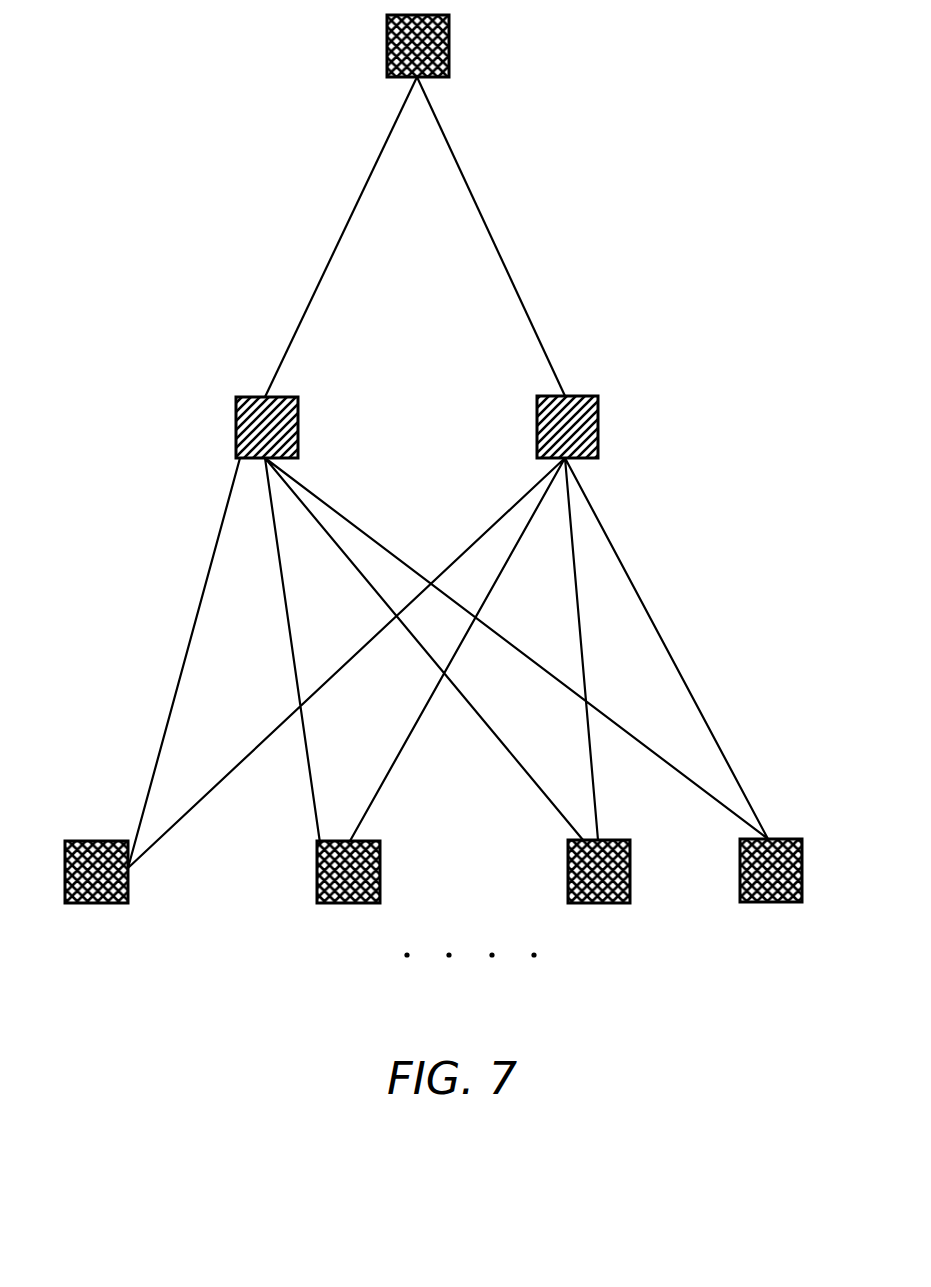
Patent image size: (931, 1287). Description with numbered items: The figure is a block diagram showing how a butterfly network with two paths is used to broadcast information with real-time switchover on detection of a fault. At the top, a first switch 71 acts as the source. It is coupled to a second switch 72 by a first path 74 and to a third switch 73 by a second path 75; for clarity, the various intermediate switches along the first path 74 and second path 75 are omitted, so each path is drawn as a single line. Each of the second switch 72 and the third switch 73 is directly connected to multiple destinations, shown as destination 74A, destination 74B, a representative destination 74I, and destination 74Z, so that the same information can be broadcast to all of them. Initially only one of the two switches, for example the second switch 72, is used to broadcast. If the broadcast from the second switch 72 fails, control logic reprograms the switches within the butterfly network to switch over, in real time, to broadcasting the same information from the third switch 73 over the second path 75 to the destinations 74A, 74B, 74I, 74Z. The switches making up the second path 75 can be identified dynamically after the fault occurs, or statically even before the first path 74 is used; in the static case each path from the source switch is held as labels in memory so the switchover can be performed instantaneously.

The first switch 71 is at (449, 44).
The second switch 72 is at (298, 424).
The third switch 73 is at (598, 424).
The first path 74 is at (336, 250).
The second path 75 is at (489, 233).
The destination 74A is at (96, 904).
The destination 74B is at (349, 904).
The destination 74I is at (599, 904).
The destination 74Z is at (772, 904).